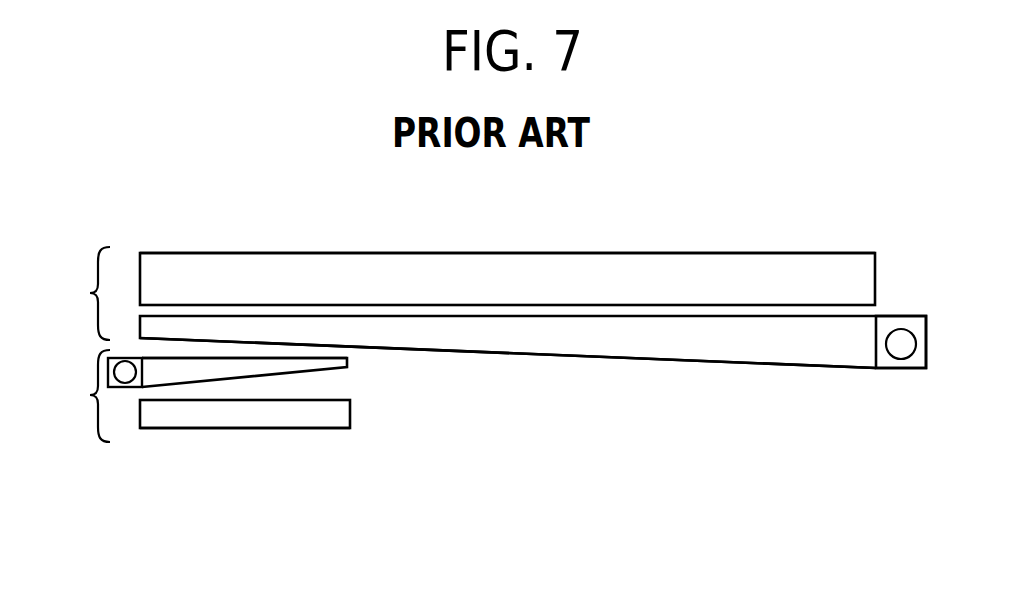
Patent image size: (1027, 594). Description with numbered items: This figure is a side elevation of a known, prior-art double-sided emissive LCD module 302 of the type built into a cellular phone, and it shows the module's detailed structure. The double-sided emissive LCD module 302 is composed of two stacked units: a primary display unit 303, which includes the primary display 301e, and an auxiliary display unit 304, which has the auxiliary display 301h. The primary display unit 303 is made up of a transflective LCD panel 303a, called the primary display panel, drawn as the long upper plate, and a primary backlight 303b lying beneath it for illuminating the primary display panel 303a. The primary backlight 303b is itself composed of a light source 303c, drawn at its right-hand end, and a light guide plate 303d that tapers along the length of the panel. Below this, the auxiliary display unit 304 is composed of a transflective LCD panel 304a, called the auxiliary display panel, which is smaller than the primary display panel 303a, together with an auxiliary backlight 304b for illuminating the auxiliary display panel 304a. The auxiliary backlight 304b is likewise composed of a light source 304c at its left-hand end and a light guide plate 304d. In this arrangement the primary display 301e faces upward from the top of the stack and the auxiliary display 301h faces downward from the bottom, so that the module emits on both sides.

The double-sided emissive LCD module 302 is at (716, 450).
The primary display unit 303 is at (74, 293).
The transflective LCD panel (primary display panel) 303a is at (836, 274).
The primary backlight 303b is at (795, 368).
The light source 303c is at (903, 357).
The light guide plate 303d is at (653, 343).
The auxiliary display unit 304 is at (74, 396).
The transflective LCD panel (auxiliary display panel) 304a is at (335, 417).
The auxiliary backlight 304b is at (207, 356).
The light source 304c is at (117, 388).
The light guide plate 304d is at (348, 362).
The primary display 301e is at (688, 253).
The auxiliary display 301h is at (257, 430).